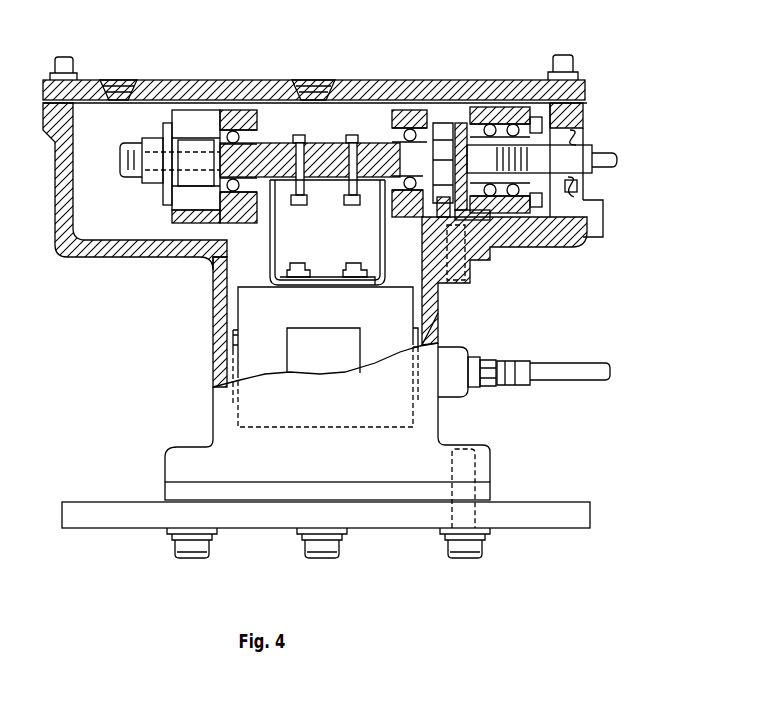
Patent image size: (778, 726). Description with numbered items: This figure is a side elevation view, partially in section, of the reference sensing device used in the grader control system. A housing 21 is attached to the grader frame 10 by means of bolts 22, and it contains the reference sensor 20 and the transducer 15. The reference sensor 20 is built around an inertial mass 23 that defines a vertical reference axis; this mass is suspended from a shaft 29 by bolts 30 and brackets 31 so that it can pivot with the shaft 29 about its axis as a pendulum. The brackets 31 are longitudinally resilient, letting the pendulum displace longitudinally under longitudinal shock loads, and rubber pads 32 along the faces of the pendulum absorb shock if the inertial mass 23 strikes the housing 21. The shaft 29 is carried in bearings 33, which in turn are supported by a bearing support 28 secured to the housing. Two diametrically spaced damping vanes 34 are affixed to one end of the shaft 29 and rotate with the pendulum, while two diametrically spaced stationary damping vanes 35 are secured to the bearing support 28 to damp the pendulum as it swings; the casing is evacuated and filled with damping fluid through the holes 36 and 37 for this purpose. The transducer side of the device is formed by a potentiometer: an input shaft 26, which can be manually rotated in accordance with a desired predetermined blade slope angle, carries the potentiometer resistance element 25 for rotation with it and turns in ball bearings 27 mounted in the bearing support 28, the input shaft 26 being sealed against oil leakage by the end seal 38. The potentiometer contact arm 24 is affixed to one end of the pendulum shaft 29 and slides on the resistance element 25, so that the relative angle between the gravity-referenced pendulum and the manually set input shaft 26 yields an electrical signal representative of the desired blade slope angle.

The grader frame 10 is at (137, 520).
The transducer 15 is at (447, 107).
The reference sensor 20 is at (232, 298).
The housing 21 is at (173, 457).
The bolts 22 is at (477, 555).
The inertial mass 23 is at (403, 320).
The potentiometer contact arm 24 is at (475, 217).
The potentiometer resistance element 25 is at (462, 125).
The input shaft 26 is at (610, 157).
The lower bearing 27 is at (530, 217).
The bearing support 28 is at (502, 110).
The shaft 29 is at (328, 148).
The bolts 30 is at (348, 262).
The brackets 31 is at (382, 248).
The rubber pads 32 is at (233, 355).
The bearings 33 is at (240, 130).
The damping vanes 34 is at (197, 160).
The stationary damping vanes 35 is at (198, 122).
The hole 36 is at (124, 84).
The hole 37 is at (320, 83).
The end seal 38 is at (577, 187).